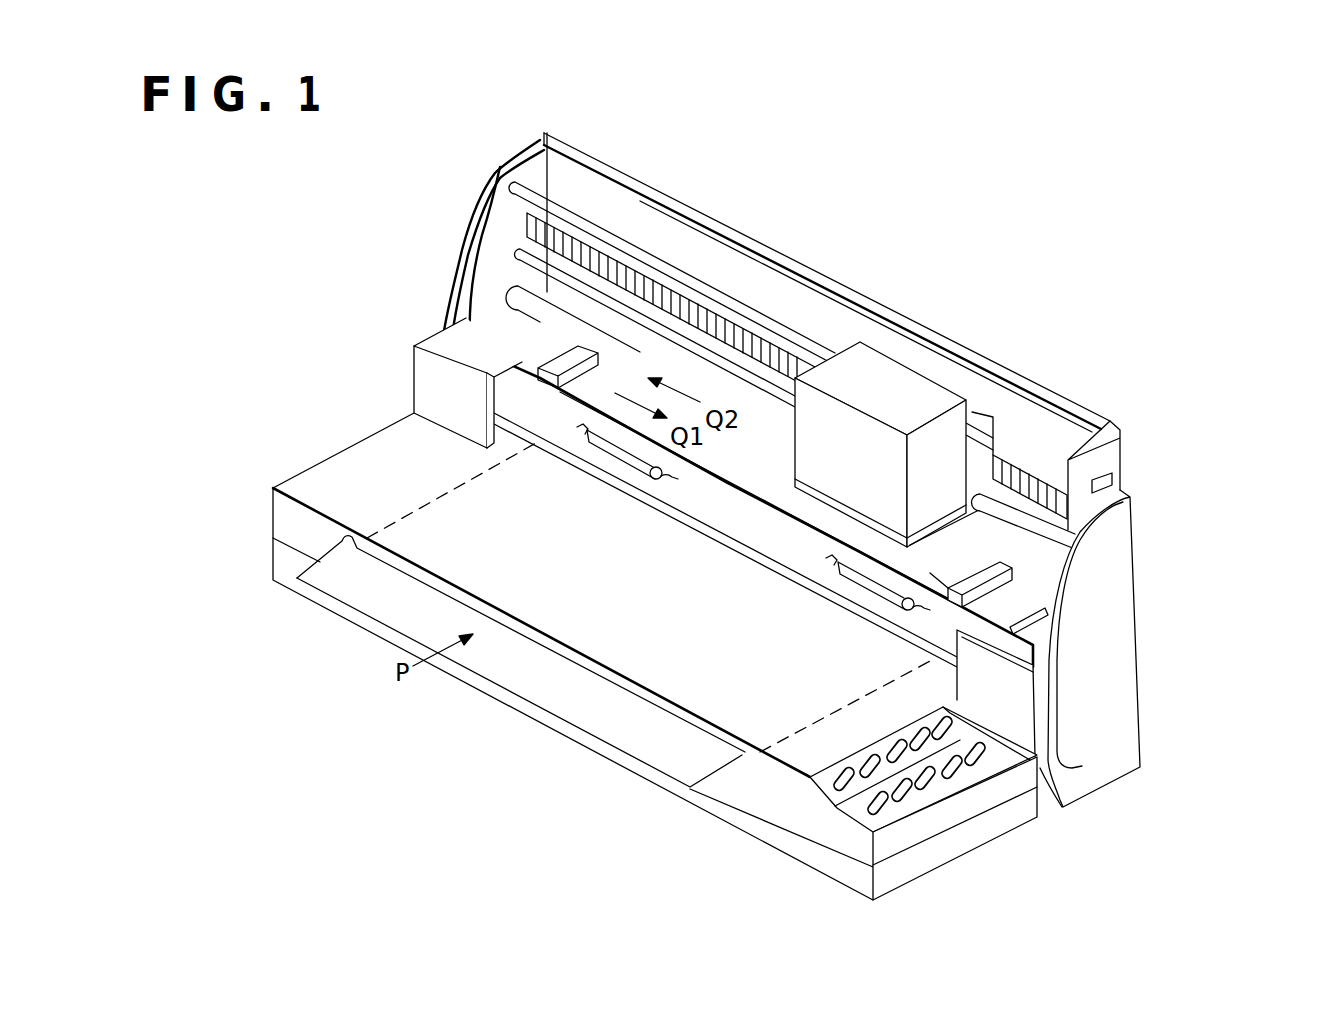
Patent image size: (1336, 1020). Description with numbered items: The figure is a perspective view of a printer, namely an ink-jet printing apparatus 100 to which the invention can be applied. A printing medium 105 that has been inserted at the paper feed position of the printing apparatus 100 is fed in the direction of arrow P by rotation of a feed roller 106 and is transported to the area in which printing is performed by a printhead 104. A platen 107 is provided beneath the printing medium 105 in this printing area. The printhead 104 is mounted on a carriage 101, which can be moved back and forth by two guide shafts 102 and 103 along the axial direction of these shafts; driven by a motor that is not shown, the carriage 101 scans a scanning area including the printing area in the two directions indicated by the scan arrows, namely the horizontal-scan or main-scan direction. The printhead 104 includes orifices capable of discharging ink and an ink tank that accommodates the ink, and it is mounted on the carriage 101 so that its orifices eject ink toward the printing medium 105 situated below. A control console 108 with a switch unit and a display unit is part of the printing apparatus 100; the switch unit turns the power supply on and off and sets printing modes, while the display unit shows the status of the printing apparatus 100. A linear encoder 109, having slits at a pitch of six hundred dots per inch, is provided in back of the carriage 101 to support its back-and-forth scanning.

The ink-jet printing apparatus 100 is at (972, 196).
The carriage 101 is at (983, 462).
The guide shaft 102 is at (512, 181).
The guide shaft 103 is at (516, 258).
The printhead 104 is at (887, 387).
The printing medium 105 is at (557, 673).
The feed roller 106 is at (1032, 577).
The platen 107 is at (538, 360).
The control console 108 is at (980, 778).
The linear encoder 109 is at (687, 292).